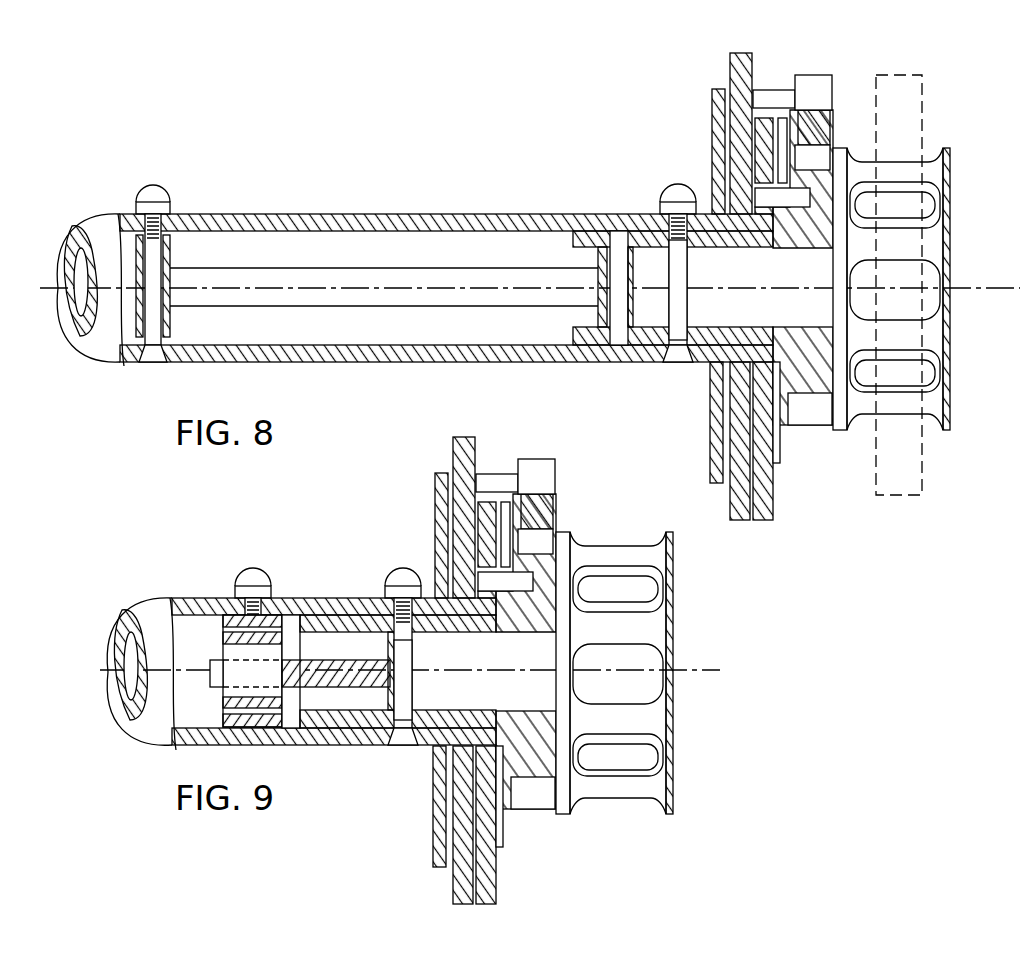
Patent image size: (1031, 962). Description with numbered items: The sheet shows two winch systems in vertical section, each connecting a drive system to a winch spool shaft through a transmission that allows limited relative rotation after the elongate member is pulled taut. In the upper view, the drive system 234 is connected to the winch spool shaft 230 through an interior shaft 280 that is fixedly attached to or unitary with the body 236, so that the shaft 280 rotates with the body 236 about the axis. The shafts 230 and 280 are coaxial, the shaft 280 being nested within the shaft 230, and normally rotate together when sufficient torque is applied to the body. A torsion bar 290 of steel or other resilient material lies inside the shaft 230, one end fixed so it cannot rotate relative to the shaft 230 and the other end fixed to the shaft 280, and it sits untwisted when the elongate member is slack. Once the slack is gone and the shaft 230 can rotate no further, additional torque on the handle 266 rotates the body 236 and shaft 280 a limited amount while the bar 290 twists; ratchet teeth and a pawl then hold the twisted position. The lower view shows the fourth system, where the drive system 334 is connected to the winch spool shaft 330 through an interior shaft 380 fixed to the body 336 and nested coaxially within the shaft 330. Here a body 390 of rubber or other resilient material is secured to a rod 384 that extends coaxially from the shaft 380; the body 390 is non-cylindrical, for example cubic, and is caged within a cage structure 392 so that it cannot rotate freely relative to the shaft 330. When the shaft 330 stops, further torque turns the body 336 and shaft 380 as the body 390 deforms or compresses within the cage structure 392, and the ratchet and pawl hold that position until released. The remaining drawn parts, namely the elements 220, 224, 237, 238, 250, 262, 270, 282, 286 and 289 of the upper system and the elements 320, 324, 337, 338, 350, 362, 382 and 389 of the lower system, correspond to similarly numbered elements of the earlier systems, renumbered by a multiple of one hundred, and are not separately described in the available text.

In FIG. 8, the axle assembly 220 is at (640, 133).
In FIG. 8, the mounting plate 224 is at (730, 500).
In FIG. 8, the winch spool shaft 230 is at (400, 214).
In FIG. 8, the drive system 234 is at (952, 184).
In FIG. 8, the body 236 is at (935, 322).
In FIG. 8, the rim flange 237 is at (908, 160).
In FIG. 8, the wheel bolt 238 is at (810, 412).
In FIG. 8, the bearing retainer 250 is at (820, 80).
In FIG. 8, the rim opening 262 is at (935, 276).
In FIG. 8, the handle 266 is at (924, 455).
In FIG. 8, the mounting plate 270 is at (755, 518).
In FIG. 8, the interior shaft 280 is at (640, 232).
In FIG. 8, the fastener 282 is at (686, 276).
In FIG. 8, the spacer plate 286 is at (776, 468).
In FIG. 8, the fastener shank 289 is at (690, 318).
In FIG. 8, the torsion bar 290 is at (270, 270).
In FIG. 9, the axle assembly 320 is at (708, 636).
In FIG. 9, the mounting plate 324 is at (457, 880).
In FIG. 9, the winch spool shaft 330 is at (318, 596).
In FIG. 9, the drive system 334 is at (678, 712).
In FIG. 9, the body 336 is at (675, 558).
In FIG. 9, the rim flange 337 is at (622, 544).
In FIG. 9, the wheel bolt 338 is at (532, 800).
In FIG. 9, the bearing retainer 350 is at (546, 476).
In FIG. 9, the rim opening 362 is at (640, 764).
In FIG. 9, the interior shaft 380 is at (372, 614).
In FIG. 9, the fastener 382 is at (420, 657).
In FIG. 9, the rod 384 is at (346, 676).
In FIG. 9, the fastener shank 389 is at (420, 692).
In FIG. 9, the body of resilient material 390 is at (226, 640).
In FIG. 9, the cage structure 392 is at (251, 584).